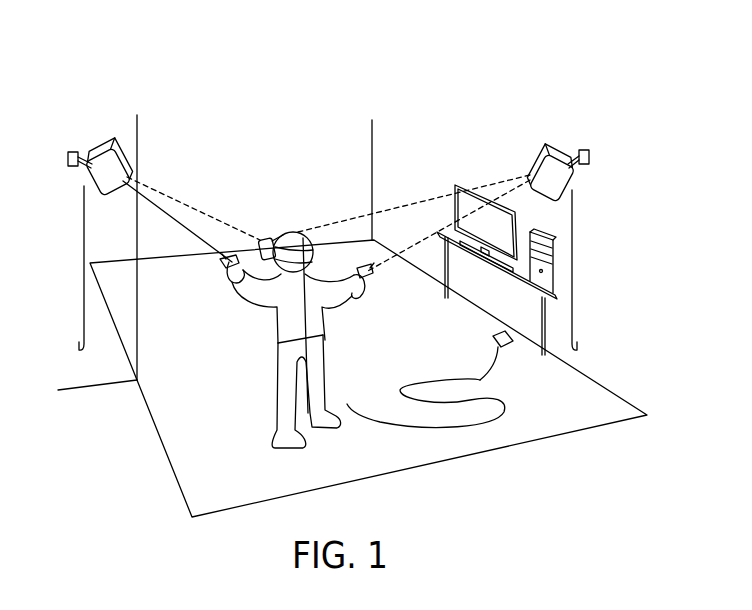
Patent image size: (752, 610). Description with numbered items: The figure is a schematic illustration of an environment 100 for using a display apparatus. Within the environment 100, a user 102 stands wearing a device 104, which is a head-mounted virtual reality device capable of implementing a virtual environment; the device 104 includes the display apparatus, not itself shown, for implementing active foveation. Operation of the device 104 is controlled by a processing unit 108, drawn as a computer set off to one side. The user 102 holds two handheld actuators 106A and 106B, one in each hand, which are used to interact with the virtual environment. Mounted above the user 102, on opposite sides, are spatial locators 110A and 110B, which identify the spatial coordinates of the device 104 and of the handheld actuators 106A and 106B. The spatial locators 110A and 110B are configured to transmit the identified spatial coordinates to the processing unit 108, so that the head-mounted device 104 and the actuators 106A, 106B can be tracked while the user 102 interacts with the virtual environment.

The environment 100 is at (544, 102).
The user 102 is at (160, 455).
The device 104 is at (272, 233).
The handheld actuator 106A is at (230, 262).
The handheld actuator 106B is at (361, 266).
The processing unit 108 is at (554, 276).
The spatial locator 110A is at (106, 148).
The spatial locator 110B is at (554, 150).